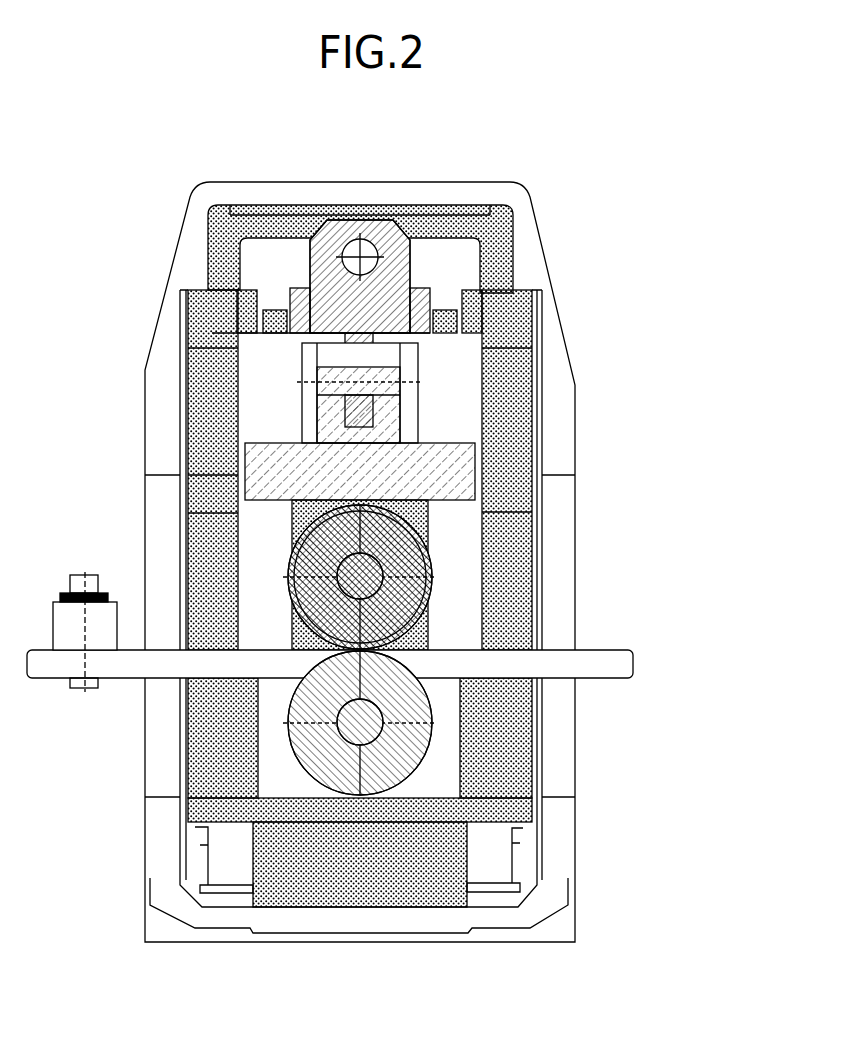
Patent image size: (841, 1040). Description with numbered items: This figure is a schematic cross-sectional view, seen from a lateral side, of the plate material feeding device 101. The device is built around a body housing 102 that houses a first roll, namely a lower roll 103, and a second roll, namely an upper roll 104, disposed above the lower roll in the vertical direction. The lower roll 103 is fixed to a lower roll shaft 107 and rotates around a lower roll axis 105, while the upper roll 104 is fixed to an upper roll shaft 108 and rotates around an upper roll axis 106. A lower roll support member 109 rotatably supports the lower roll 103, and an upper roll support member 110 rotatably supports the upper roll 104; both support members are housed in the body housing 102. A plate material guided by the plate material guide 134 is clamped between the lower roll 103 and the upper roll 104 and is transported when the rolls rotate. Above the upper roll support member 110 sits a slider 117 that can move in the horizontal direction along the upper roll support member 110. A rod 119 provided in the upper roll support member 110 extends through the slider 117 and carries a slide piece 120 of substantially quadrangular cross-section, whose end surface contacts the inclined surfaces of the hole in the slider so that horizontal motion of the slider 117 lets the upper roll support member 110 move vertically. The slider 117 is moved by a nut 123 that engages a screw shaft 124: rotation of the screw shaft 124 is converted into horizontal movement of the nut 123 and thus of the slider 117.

The plate material feeding device 101 is at (568, 200).
The body housing 102 is at (562, 347).
The first roll (lower roll) 103 is at (430, 737).
The second roll (upper roll) 104 is at (430, 546).
The first roll axis (lower roll axis) 105 is at (370, 741).
The second roll axis (upper roll axis) 106 is at (292, 540).
The first roll shaft (lower roll shaft) 107 is at (338, 718).
The second roll shaft (upper roll shaft) 108 is at (384, 578).
The first roll support member (lower roll support member) 109 is at (503, 787).
The second roll support member (upper roll support member) 110 is at (253, 470).
The slider 117 is at (357, 333).
The rod 119 is at (330, 390).
The slide piece 120 is at (310, 370).
The nut 123 is at (312, 210).
The screw shaft 124 is at (394, 208).
The plate material guide 134 is at (613, 660).